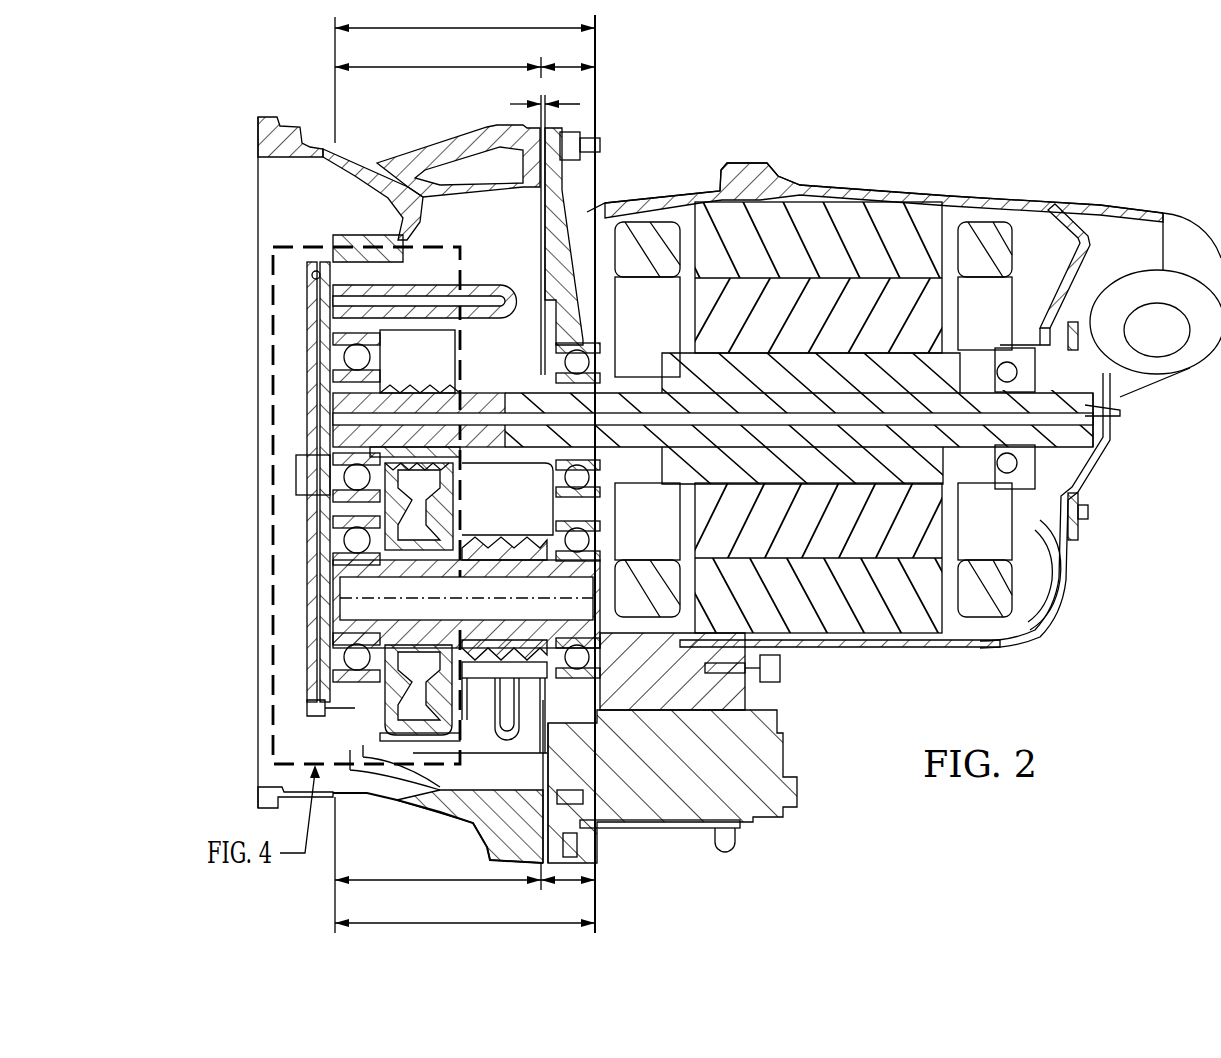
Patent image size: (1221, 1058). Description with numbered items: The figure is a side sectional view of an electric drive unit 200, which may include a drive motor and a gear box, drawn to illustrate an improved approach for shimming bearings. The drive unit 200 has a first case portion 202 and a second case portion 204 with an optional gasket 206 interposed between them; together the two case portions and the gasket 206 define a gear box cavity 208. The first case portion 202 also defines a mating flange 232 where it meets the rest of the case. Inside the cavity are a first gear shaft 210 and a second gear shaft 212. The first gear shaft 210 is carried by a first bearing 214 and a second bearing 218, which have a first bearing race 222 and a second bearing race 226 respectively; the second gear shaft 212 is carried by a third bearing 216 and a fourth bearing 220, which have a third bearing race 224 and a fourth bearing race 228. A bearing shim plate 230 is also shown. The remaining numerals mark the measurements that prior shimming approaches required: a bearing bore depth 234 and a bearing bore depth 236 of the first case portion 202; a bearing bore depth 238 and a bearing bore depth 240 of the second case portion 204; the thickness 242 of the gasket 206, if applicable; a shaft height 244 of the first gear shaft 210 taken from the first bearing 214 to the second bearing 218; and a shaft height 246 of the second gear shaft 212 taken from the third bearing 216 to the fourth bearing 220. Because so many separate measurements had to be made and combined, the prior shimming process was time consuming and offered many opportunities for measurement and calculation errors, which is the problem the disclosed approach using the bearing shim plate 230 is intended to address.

The drive unit 200 is at (850, 112).
The first case portion 202 is at (258, 116).
The second case portion 204 is at (737, 172).
The gasket 206 is at (557, 167).
The gear box cavity 208 is at (495, 255).
The first gear shaft 210 is at (490, 388).
The second gear shaft 212 is at (503, 540).
The first bearing 214 is at (345, 357).
The third bearing 216 is at (345, 540).
The second bearing 218 is at (577, 364).
The fourth bearing 220 is at (597, 537).
The first bearing race 222 is at (318, 350).
The third bearing race 224 is at (318, 530).
The second bearing race 226 is at (570, 337).
The fourth bearing race 228 is at (577, 535).
The bearing shim plate 230 is at (313, 320).
The mating flange 232 is at (323, 260).
The bearing bore depth 234 is at (440, 68).
The bearing bore depth 236 is at (440, 880).
The bearing bore depth 238 is at (567, 70).
The bearing bore depth 240 is at (571, 884).
The thickness of gasket 242 is at (566, 106).
The shaft height 244 is at (565, 32).
The shaft height 246 is at (571, 927).